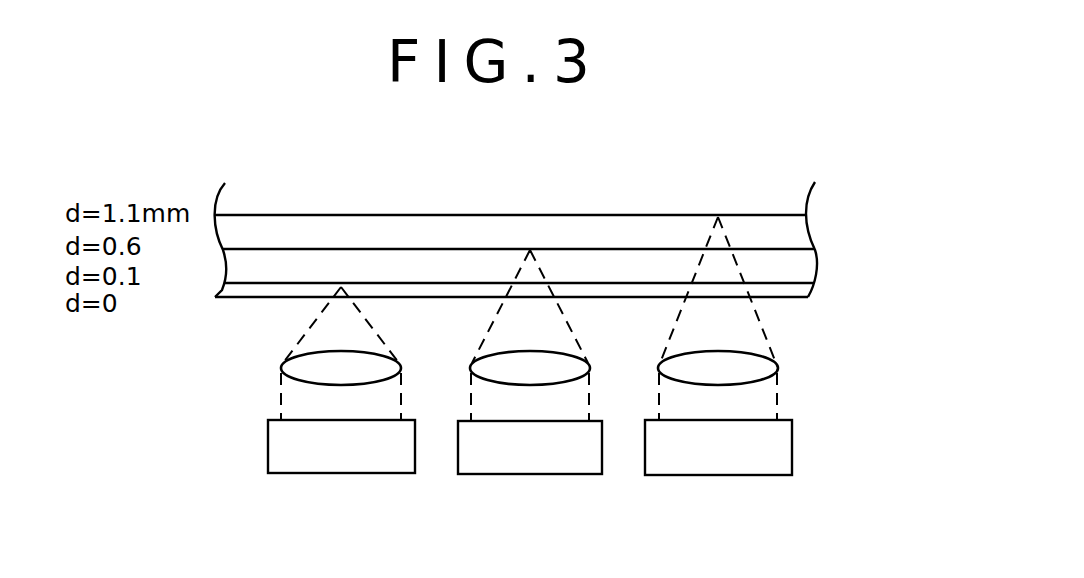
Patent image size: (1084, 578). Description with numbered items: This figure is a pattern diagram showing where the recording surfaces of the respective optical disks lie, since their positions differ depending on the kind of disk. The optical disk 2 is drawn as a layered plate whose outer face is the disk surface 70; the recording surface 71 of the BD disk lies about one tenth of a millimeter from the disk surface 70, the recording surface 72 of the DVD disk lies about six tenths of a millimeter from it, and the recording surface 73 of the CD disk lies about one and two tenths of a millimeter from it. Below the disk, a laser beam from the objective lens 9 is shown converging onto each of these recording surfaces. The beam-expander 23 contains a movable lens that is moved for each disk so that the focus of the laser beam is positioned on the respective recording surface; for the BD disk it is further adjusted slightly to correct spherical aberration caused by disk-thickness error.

The optical disc 2 is at (559, 247).
The disk surface 70 is at (808, 297).
The recording surface of the BD disk 71 is at (813, 283).
The recording surface of the DVD disk 72 is at (816, 249).
The recording surface of the CD disk 73 is at (809, 214).
The objective lens 9 is at (751, 381).
The beam-expander 23 is at (792, 445).